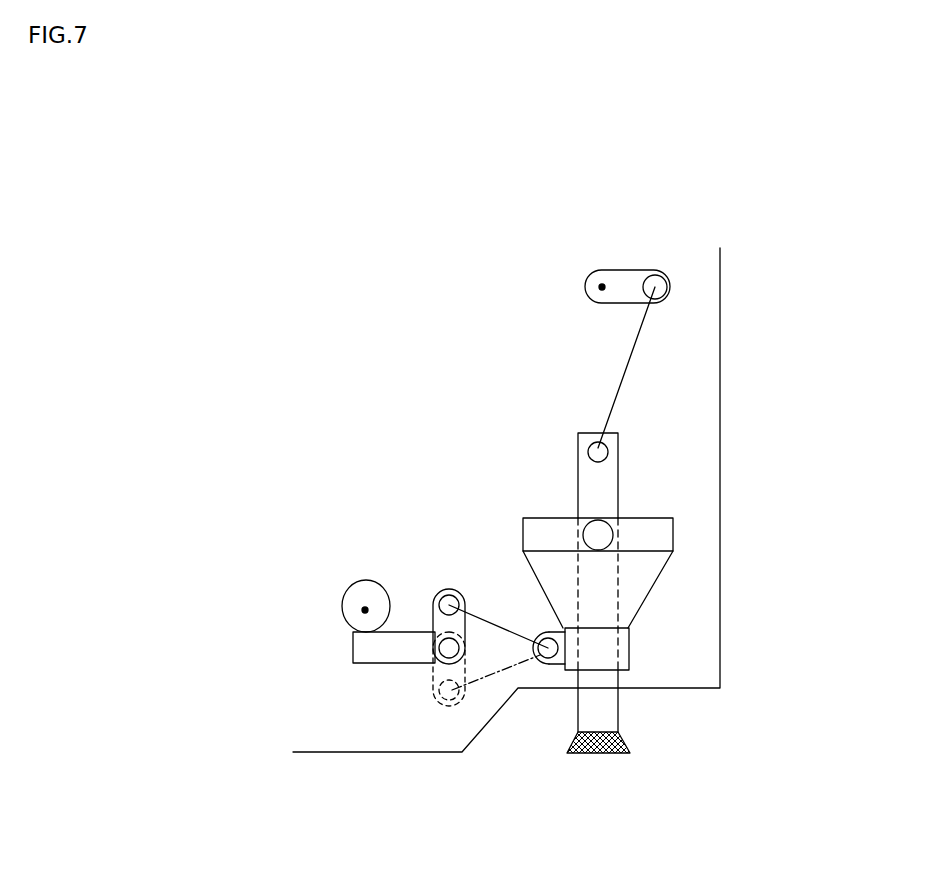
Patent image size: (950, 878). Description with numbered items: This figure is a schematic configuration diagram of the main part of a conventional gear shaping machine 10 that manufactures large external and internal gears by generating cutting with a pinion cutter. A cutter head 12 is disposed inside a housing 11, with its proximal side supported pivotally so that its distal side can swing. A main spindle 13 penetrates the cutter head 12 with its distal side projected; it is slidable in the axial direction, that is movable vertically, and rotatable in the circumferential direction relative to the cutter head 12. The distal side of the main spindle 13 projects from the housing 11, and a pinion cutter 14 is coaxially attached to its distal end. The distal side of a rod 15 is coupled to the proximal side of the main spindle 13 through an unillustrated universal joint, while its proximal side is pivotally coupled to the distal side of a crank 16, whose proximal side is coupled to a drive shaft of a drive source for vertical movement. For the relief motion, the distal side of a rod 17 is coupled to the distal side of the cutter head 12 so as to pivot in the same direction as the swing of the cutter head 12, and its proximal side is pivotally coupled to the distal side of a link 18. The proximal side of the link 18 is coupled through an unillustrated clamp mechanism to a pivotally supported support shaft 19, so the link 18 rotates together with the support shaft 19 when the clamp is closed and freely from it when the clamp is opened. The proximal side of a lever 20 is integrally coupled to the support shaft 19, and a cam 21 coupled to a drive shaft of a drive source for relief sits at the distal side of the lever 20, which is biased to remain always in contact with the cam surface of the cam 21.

The vibration damping device 10 is at (642, 770).
The housing 11 is at (720, 325).
The cutter head 12 is at (673, 535).
The main spindle 13 is at (605, 708).
The pinion cutter 14 is at (572, 756).
The rod 15 is at (622, 380).
The crank 16 is at (622, 268).
The rod 17 is at (497, 630).
The link 18 is at (465, 628).
The support shaft 19 is at (437, 655).
The lever 20 is at (373, 663).
The cam 21 is at (343, 617).